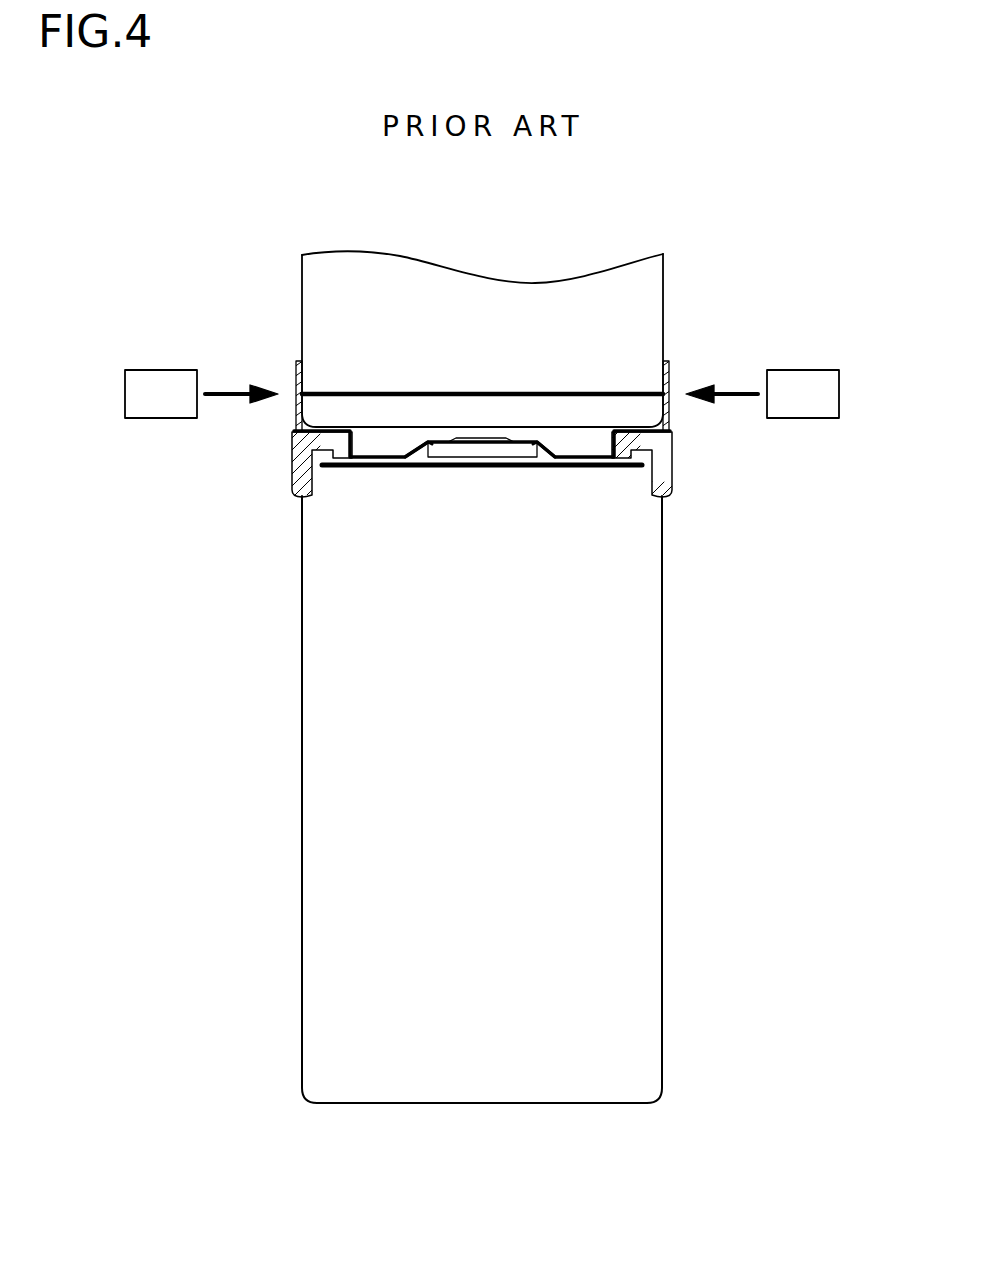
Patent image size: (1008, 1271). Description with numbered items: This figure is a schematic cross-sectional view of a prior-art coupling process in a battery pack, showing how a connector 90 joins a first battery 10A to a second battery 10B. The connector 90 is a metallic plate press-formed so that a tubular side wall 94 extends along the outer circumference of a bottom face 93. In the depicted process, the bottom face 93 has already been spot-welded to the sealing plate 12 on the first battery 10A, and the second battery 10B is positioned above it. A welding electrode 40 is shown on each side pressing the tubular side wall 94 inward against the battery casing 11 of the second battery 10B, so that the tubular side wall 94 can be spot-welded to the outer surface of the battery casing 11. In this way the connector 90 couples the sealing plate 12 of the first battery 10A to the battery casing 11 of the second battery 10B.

The first battery 10A is at (702, 718).
The second battery 10B is at (566, 337).
The battery casing 11 is at (512, 365).
The sealing plate 12 is at (367, 470).
The welding electrode 40 is at (165, 385).
The connector 90 is at (692, 414).
The bottom face 93 is at (405, 470).
The tubular side wall 94 is at (292, 377).